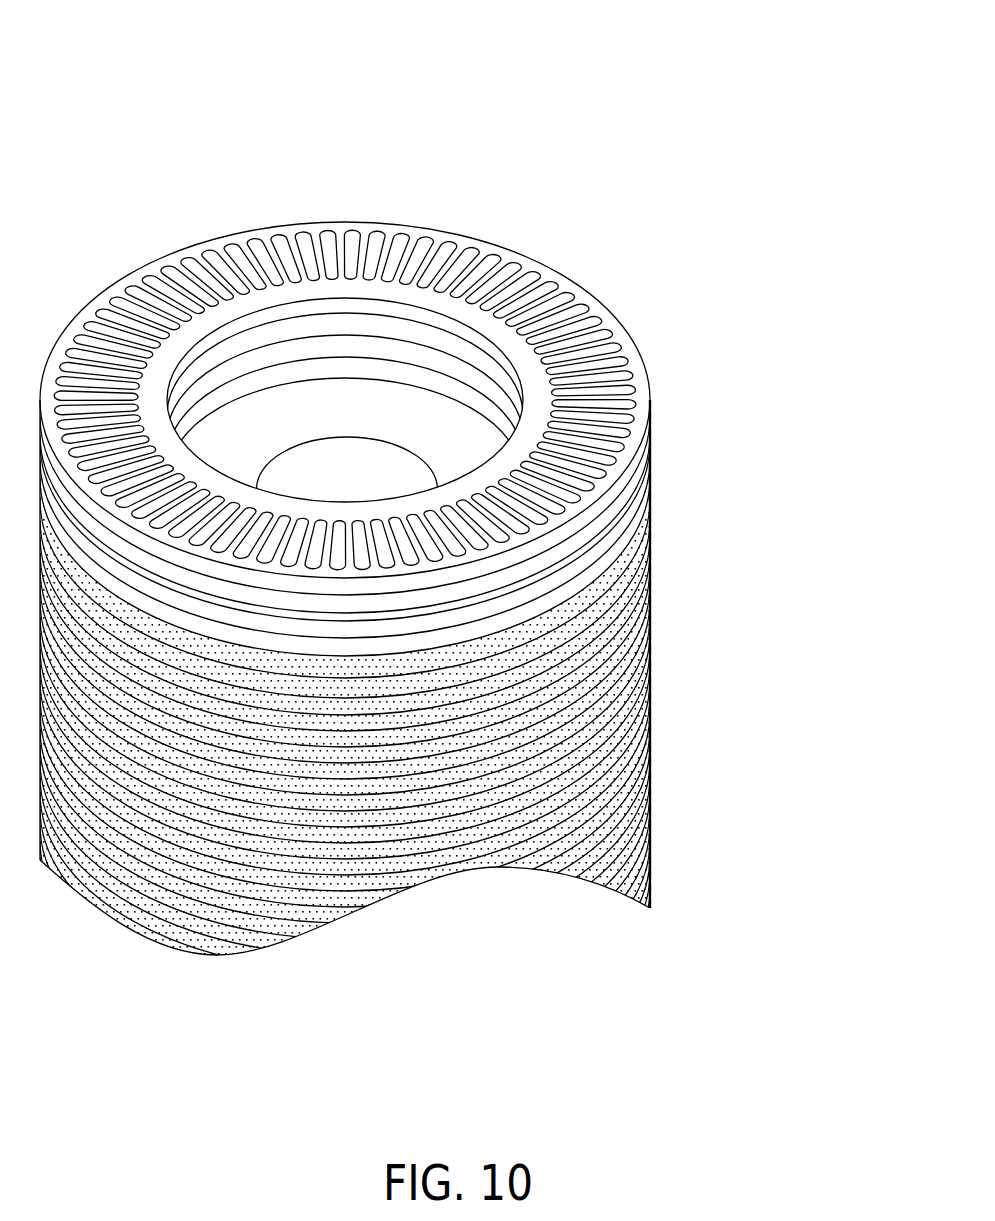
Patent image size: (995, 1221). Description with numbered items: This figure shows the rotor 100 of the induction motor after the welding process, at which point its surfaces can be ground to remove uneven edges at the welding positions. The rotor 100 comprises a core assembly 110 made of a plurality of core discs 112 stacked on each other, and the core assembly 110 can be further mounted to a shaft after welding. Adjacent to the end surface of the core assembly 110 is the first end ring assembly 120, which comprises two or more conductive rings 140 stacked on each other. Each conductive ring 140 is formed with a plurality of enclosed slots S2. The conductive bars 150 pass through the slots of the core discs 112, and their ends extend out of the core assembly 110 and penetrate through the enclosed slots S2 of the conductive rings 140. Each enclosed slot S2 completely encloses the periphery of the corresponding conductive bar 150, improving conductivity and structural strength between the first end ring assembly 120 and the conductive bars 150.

The rotor 100 is at (182, 113).
The core assembly 110 is at (670, 845).
The core discs 112 is at (573, 612).
The first end ring assembly 120 is at (812, 397).
The conductive rings 140 is at (644, 444).
The conductive bars 150 is at (456, 244).
The enclosed slots S2 is at (593, 267).